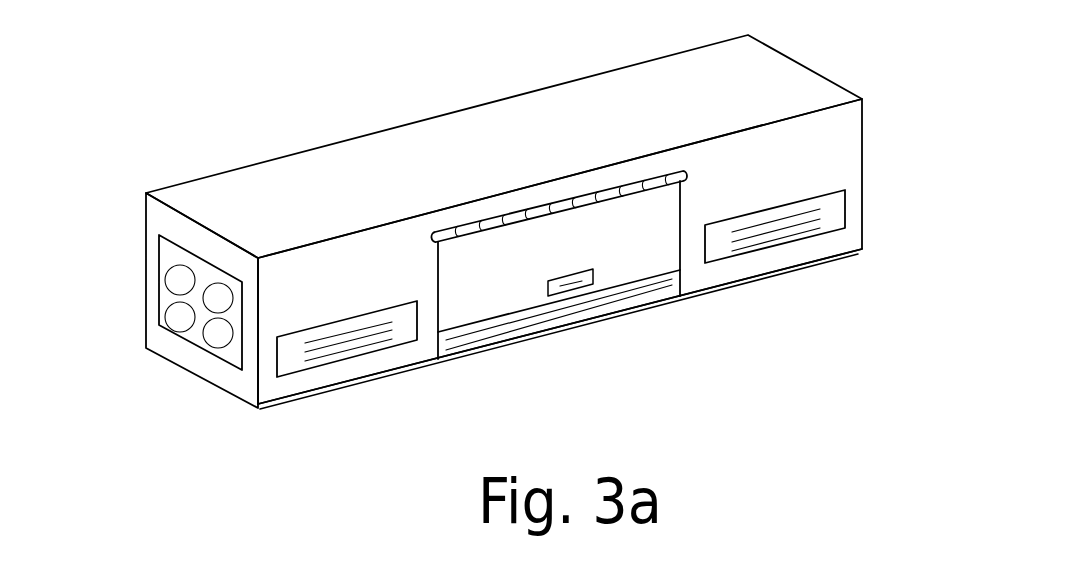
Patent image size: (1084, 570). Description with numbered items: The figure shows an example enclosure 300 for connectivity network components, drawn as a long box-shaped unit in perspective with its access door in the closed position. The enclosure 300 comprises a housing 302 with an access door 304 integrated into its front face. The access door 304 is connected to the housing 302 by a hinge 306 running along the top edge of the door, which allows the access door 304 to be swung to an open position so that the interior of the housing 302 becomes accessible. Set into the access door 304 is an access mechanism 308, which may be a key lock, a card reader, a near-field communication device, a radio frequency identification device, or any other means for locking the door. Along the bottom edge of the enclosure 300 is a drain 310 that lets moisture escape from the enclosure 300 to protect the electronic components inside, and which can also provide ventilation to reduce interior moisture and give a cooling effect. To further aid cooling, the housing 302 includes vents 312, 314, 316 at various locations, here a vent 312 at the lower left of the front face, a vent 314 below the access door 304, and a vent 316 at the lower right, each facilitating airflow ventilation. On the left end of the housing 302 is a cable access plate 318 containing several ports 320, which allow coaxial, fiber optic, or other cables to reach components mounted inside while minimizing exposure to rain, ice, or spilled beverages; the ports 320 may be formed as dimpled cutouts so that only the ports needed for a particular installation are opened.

The enclosure 300 is at (258, 76).
The housing 302 is at (773, 55).
The access door 304 is at (633, 270).
The hinge 306 is at (553, 202).
The access mechanism 308 is at (572, 285).
The drain 310 is at (413, 368).
The vent 312 is at (297, 367).
The vent 314 is at (553, 325).
The vent 316 is at (828, 223).
The cable access plate 318 is at (188, 342).
The ports 320 is at (162, 265).